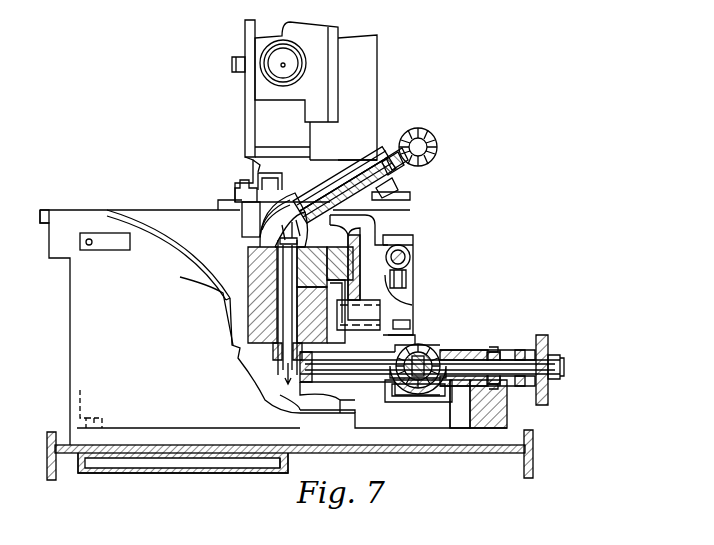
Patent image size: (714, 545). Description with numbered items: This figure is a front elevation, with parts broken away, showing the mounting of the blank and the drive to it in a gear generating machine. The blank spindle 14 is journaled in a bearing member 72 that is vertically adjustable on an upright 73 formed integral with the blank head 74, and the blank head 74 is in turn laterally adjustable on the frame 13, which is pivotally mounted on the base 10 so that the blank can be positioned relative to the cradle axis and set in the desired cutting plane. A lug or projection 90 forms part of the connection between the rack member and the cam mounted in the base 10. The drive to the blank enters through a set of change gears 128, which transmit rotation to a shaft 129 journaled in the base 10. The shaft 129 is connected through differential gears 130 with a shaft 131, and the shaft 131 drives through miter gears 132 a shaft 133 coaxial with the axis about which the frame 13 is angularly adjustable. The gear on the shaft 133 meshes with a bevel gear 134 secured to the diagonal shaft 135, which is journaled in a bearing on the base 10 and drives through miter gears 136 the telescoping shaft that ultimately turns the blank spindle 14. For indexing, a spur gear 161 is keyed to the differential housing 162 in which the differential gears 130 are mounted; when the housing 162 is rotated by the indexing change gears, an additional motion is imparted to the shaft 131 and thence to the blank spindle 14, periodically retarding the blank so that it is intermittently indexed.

The base 10 is at (77, 350).
The frame 13 is at (258, 182).
The blank spindle 14 is at (285, 63).
The bearing member 72 is at (322, 83).
The upright 73 is at (367, 82).
The blank head 74 is at (253, 163).
The lug or projection 90 is at (260, 229).
The change gears 128 is at (542, 343).
The shaft 129 is at (477, 370).
The differential gears 130 is at (430, 347).
The shaft 131 is at (348, 370).
The miter gears 132 is at (272, 362).
The shaft 133 is at (287, 283).
The bevel gear 134 is at (287, 200).
The diagonal shaft 135 is at (355, 168).
The miter gears 136 is at (400, 143).
The spur gear 161 is at (497, 355).
The differential housing 162 is at (443, 360).